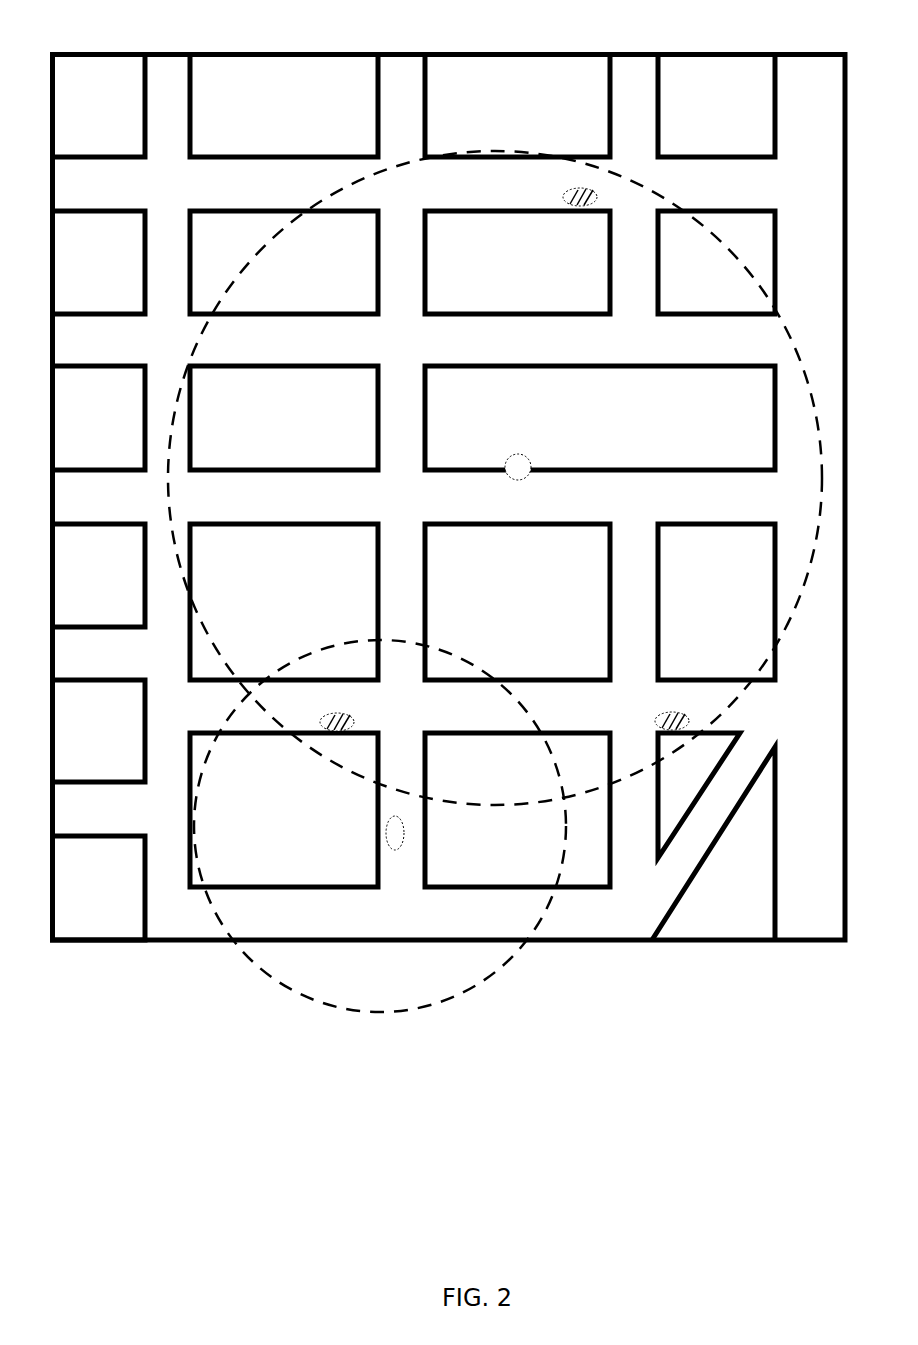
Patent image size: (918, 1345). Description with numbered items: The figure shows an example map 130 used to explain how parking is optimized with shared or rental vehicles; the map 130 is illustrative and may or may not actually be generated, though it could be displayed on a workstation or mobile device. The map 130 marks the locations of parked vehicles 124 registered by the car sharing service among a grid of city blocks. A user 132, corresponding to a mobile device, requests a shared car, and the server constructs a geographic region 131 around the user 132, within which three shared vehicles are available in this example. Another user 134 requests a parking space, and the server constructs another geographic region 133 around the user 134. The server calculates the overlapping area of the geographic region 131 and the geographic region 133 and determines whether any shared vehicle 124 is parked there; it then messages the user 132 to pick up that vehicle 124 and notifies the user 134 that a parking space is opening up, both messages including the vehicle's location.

The map 130 is at (87, 29).
The geographic region 131 is at (318, 204).
The user 132 is at (512, 456).
The geographic region 133 is at (352, 643).
The user 134 is at (398, 850).
The parked vehicles 124 is at (563, 196).